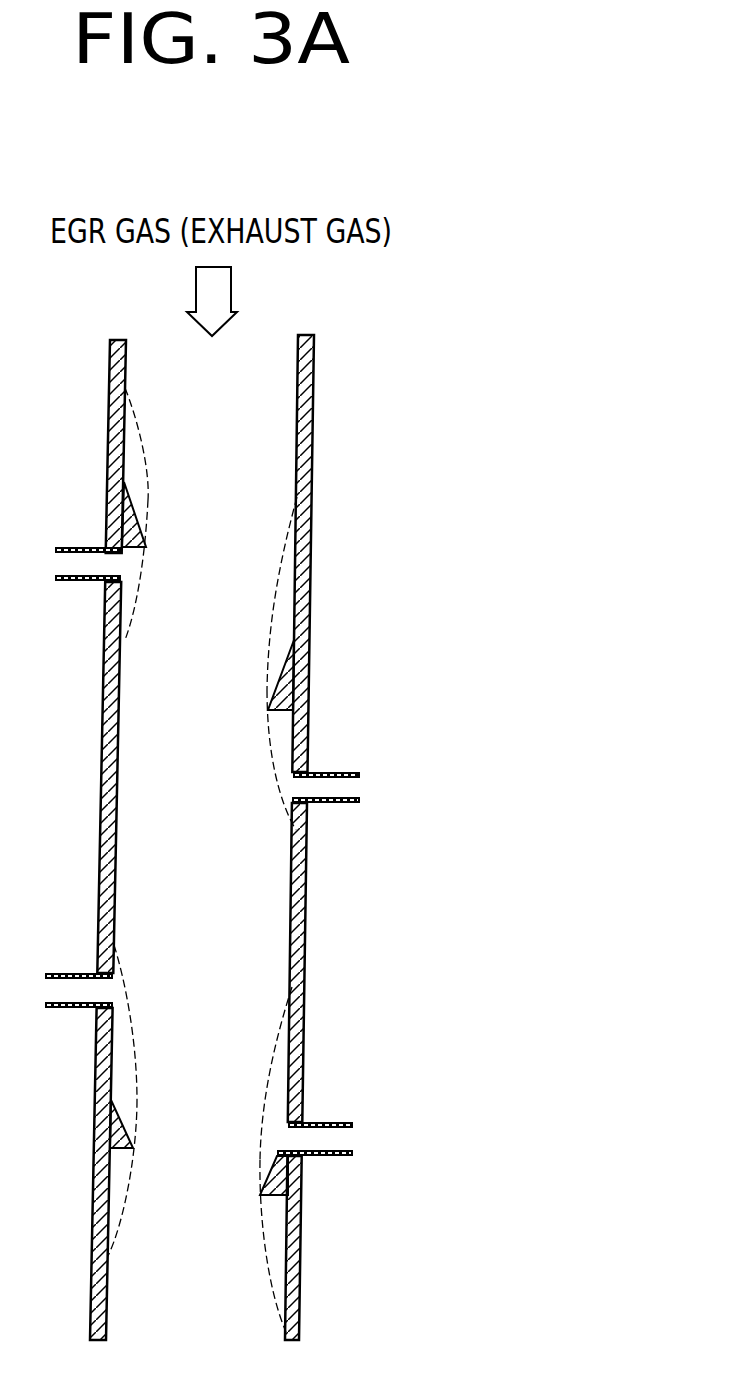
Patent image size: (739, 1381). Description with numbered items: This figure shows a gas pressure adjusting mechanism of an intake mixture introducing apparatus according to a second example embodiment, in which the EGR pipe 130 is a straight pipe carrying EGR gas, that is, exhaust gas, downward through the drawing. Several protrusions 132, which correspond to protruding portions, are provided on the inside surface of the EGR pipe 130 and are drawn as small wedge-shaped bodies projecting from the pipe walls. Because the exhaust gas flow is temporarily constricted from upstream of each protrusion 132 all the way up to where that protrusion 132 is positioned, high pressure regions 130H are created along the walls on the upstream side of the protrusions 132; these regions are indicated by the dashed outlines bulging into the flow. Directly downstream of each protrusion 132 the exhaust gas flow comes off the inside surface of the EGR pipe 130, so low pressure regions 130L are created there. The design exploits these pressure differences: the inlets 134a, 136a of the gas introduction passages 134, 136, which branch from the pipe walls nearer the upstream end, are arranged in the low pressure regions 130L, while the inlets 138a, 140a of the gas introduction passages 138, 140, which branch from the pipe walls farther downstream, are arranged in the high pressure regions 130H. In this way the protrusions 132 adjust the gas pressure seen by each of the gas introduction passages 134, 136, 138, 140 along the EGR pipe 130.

The EGR pipe 130 is at (110, 388).
The high pressure region 130H is at (140, 428).
The low pressure region 130L is at (128, 628).
The protrusion 132 is at (147, 520).
The gas introduction passage 134 is at (80, 547).
The inlet 134a is at (116, 567).
The gas introduction passage 136 is at (335, 768).
The inlet 136a is at (300, 788).
The gas introduction passage 138 is at (78, 972).
The inlet 138a is at (108, 990).
The gas introduction passage 140 is at (330, 1118).
The inlet 140a is at (197, 1112).